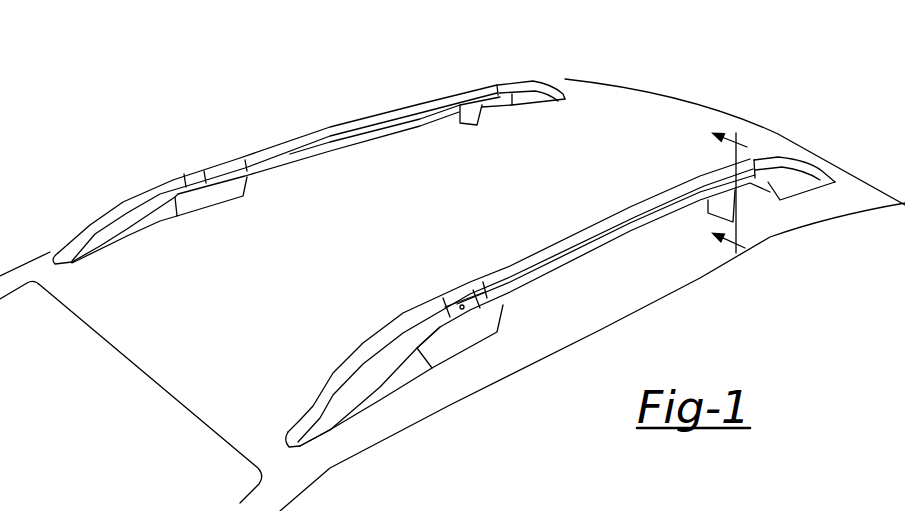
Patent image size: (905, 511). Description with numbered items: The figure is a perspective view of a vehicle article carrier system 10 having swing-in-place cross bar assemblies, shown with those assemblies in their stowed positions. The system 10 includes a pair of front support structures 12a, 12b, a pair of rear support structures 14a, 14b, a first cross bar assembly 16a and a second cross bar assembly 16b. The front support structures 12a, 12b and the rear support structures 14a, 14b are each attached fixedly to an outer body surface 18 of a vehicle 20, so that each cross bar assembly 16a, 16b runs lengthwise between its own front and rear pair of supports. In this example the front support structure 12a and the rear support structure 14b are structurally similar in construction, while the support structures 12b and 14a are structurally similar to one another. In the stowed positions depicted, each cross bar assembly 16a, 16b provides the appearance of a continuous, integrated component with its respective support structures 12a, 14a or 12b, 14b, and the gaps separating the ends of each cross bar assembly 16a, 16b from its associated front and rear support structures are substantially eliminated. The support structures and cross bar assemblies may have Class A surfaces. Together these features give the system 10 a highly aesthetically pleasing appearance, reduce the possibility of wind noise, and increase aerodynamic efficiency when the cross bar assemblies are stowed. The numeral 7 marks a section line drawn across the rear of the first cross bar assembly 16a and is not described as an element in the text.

The vehicle article carrier system 10 is at (417, 83).
The front support structure 12a is at (380, 401).
The front support structure 12b is at (128, 237).
The rear support structure 14a is at (781, 203).
The rear support structure 14b is at (500, 117).
The first cross bar assembly 16a is at (597, 250).
The second cross bar assembly 16b is at (323, 129).
The outer body surface 18 is at (200, 362).
The vehicle 20 is at (560, 70).
The section line 7- 7 is at (746, 194).